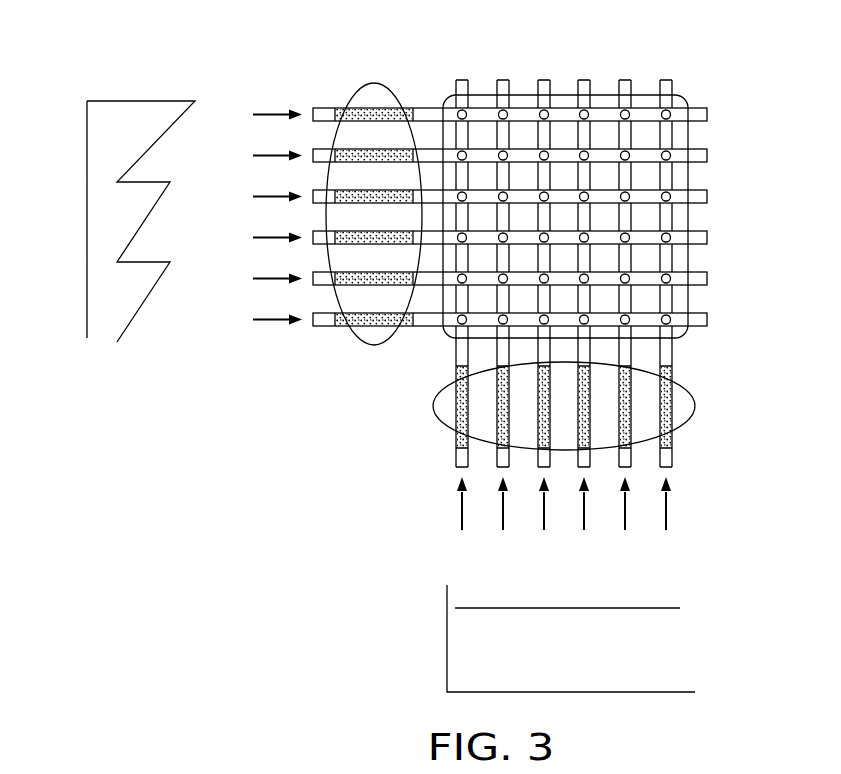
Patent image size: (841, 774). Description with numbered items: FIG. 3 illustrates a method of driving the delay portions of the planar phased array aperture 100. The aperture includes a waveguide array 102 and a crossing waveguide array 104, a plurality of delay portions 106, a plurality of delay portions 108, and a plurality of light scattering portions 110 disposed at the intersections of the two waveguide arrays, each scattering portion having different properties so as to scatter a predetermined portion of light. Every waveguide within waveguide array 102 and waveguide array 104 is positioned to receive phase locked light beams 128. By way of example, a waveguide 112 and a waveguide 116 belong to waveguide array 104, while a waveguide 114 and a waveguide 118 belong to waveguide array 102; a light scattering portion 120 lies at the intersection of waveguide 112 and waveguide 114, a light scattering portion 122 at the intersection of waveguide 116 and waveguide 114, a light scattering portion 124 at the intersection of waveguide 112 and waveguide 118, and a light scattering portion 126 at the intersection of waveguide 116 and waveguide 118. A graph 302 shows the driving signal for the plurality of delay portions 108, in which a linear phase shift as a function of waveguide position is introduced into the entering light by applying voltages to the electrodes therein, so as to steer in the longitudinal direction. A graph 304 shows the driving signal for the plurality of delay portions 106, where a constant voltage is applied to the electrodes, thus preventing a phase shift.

The planar phased array aperture 100 is at (370, 372).
The waveguide array 102 is at (730, 72).
The waveguide array 104 is at (703, 75).
The plurality of delay portions 106 is at (700, 420).
The plurality of delay portions 108 is at (362, 88).
The plurality of light scattering portions 110 is at (684, 335).
The waveguide 112 is at (440, 275).
The waveguide 114 is at (498, 334).
The waveguide 116 is at (685, 275).
The waveguide 118 is at (499, 100).
The light scattering portion 120 is at (458, 322).
The light scattering portion 122 is at (669, 321).
The light scattering portion 124 is at (458, 113).
The light scattering portion 126 is at (668, 112).
The phase locked light beams 128 is at (238, 102).
The graph 302 is at (200, 84).
The graph 304 is at (425, 578).